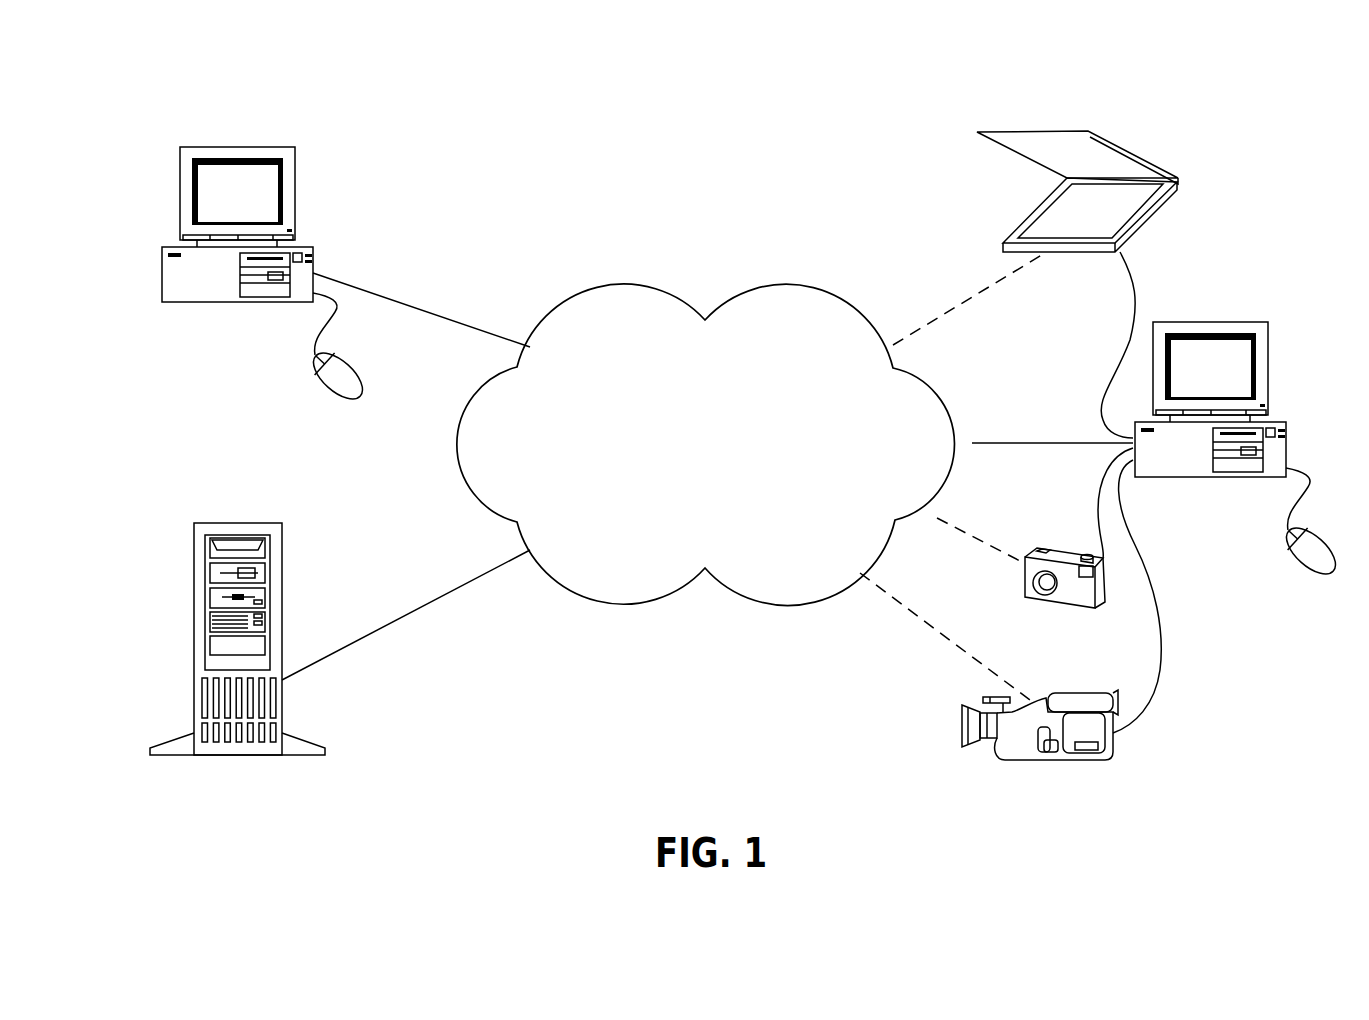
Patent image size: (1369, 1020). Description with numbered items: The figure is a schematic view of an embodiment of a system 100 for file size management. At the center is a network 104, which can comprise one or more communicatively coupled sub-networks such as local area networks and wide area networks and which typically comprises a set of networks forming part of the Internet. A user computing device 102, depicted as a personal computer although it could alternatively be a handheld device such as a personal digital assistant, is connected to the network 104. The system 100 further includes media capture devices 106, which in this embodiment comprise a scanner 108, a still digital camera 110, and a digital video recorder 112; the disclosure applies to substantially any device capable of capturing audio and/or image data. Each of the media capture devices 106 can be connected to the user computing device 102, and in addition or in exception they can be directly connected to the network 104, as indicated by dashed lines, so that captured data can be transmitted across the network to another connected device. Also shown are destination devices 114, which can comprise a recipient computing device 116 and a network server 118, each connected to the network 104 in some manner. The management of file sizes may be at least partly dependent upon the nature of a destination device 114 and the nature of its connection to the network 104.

The system for file size management 100 is at (550, 93).
The user computing device 102 is at (1278, 360).
The network 104 is at (690, 467).
The media capture devices 106 is at (1193, 131).
The scanner 108 is at (1157, 210).
The still digital camera 110 is at (1070, 593).
The digital video recorder 112 is at (1007, 750).
The destination devices 114 is at (338, 140).
The recipient computing device 116 is at (172, 290).
The network server 118 is at (275, 610).